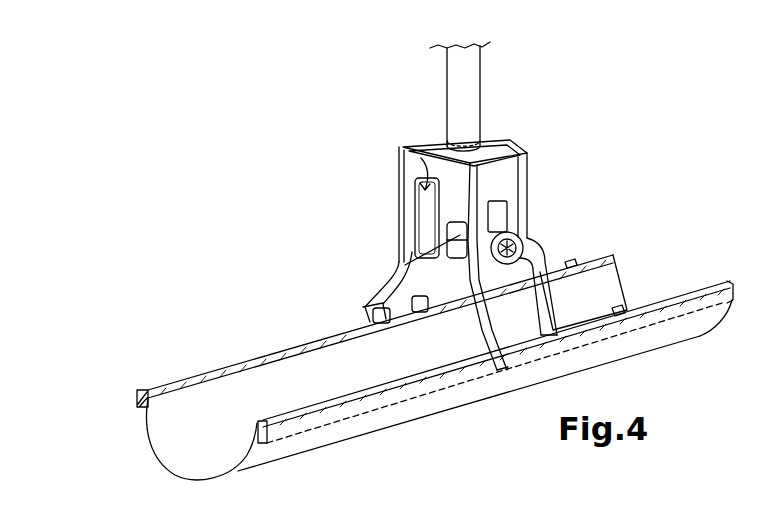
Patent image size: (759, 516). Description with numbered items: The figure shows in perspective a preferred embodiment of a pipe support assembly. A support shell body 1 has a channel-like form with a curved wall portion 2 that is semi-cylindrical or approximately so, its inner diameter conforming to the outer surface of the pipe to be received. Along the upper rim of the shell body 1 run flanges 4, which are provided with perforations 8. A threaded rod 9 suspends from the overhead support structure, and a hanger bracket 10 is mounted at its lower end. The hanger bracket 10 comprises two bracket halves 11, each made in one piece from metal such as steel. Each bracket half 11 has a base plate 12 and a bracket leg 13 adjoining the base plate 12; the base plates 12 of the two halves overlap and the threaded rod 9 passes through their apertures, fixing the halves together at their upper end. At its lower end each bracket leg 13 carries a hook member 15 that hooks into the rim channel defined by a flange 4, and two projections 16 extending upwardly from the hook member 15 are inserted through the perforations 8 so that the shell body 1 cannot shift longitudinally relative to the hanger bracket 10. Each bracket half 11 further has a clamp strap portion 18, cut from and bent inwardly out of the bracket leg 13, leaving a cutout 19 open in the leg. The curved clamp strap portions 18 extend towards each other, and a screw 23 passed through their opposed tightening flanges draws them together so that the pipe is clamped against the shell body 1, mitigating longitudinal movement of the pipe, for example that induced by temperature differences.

The support shell body 1 is at (293, 452).
The curved wall portion 2 is at (158, 458).
The flange 4 is at (247, 357).
The perforations 8 is at (570, 262).
The threaded rod 9 is at (462, 91).
The hanger bracket 10 is at (543, 208).
The bracket half 11 is at (398, 200).
The base plate 12 is at (433, 143).
The bracket leg 13 is at (515, 193).
The hook member 15 is at (505, 285).
The projections 16 is at (374, 316).
The clamp strap portion 18 is at (408, 267).
The cutout 19 is at (421, 157).
The screw 23 is at (452, 240).